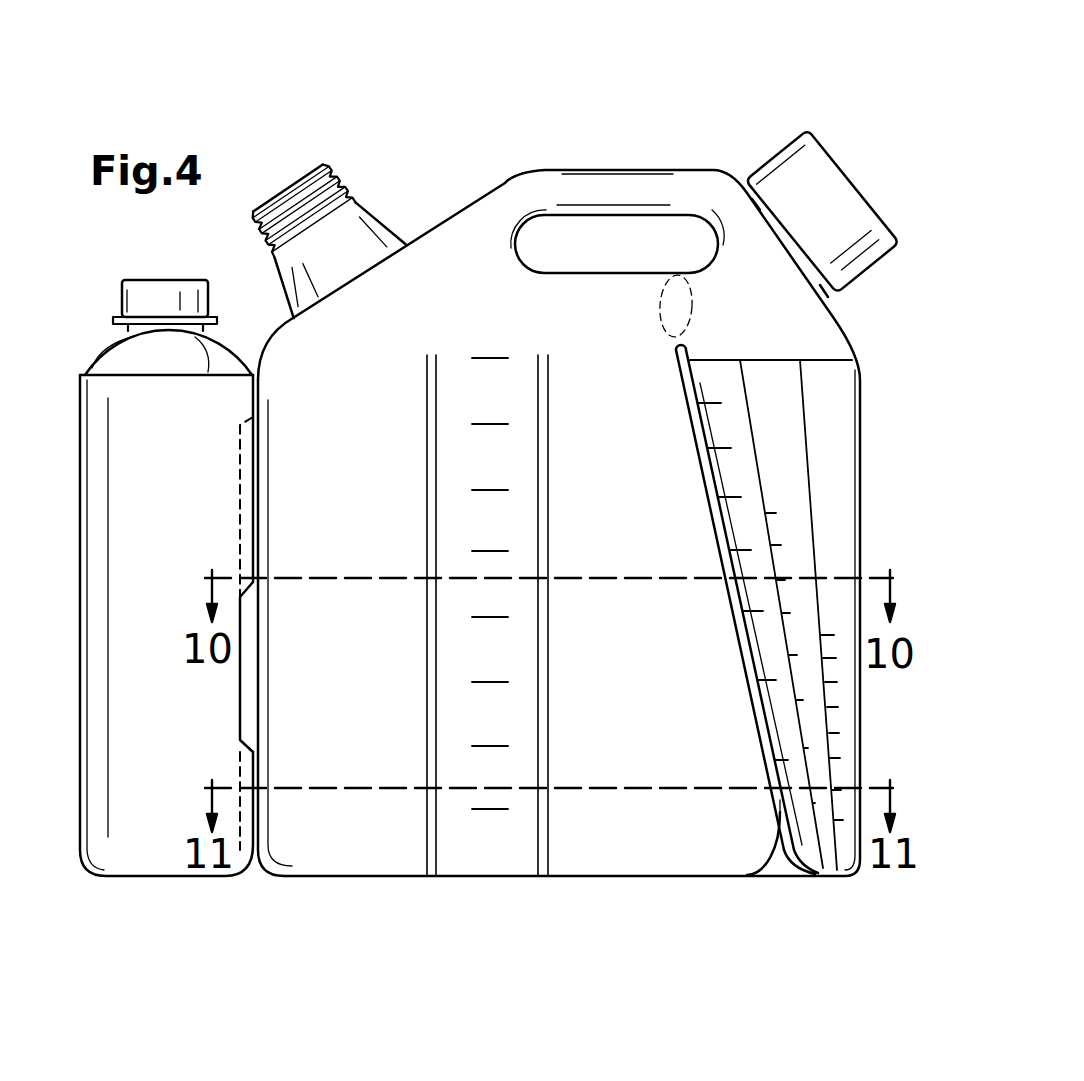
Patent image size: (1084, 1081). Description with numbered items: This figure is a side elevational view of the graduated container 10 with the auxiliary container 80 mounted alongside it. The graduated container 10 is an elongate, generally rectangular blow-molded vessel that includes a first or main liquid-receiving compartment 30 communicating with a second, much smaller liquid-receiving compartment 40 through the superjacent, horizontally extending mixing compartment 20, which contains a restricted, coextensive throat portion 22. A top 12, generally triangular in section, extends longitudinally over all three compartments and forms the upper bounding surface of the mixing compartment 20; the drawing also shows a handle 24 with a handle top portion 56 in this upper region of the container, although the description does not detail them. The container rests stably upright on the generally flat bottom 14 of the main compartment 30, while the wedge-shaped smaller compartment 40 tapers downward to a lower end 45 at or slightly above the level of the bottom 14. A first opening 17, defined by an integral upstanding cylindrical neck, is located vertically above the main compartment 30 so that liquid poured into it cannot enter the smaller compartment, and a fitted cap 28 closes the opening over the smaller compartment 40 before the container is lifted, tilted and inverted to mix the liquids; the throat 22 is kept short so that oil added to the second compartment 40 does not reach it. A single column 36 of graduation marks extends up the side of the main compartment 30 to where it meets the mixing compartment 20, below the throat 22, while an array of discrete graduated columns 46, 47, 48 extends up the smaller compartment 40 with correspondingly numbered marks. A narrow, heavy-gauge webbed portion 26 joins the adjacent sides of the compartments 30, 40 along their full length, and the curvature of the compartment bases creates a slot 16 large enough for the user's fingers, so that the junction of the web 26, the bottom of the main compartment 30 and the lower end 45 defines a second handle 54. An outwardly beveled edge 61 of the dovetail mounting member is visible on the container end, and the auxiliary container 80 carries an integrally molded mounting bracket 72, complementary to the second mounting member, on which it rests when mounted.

The graduated container 10 is at (523, 132).
The top 12 is at (430, 228).
The bottom 14 is at (470, 880).
The slot 16 is at (784, 865).
The first opening 17 is at (362, 242).
The mixing compartment 20 is at (485, 273).
The throat portion 22 is at (660, 275).
The handle 24 is at (657, 273).
The webbed portion 26 is at (677, 348).
The fitted cap 28 is at (820, 202).
The main liquid-receiving compartment 30 is at (335, 732).
The column of graduation marks 36 is at (490, 747).
The second liquid-receiving compartment 40 is at (862, 468).
The lower end of second compartment 45 is at (842, 877).
The graduated column 46 is at (743, 473).
The graduated column 47 is at (793, 552).
The graduated column 48 is at (843, 717).
The second handle 54 is at (821, 886).
The handle top portion 56 is at (593, 193).
The edge or flange 61 is at (245, 660).
The molded mounting bracket 72 is at (245, 520).
The auxiliary container 80 is at (122, 757).